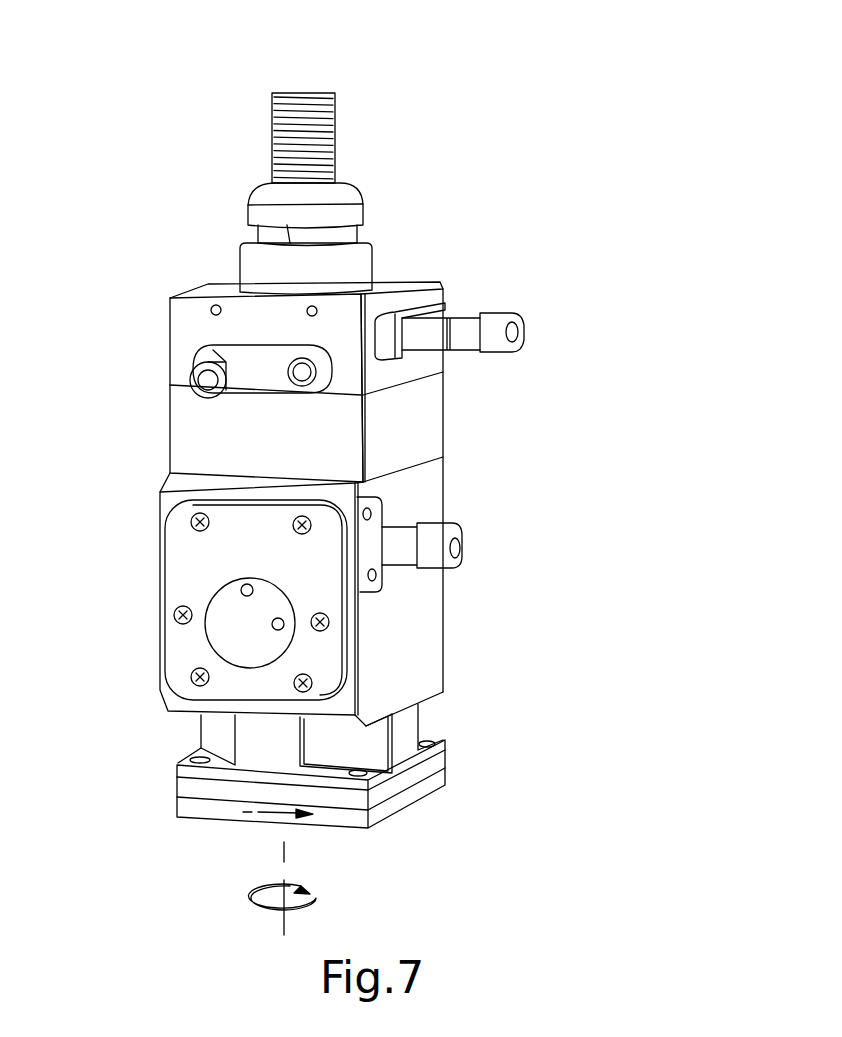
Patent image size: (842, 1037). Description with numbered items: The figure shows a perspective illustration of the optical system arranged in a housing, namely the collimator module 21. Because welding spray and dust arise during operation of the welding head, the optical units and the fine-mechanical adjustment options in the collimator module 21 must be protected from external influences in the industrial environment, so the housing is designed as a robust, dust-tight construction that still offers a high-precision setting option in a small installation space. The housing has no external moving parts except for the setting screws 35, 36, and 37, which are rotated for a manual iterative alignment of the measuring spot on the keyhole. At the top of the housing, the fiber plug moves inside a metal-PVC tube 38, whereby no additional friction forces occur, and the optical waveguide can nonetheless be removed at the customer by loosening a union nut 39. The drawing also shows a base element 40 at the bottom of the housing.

The collimator module 21 is at (492, 243).
The setting screw 35 is at (468, 328).
The setting screw 36 is at (222, 347).
The setting screw 37 is at (443, 512).
The metal-PVC tube 38 is at (338, 149).
The union nut 39 is at (365, 206).
The base plate 40 is at (412, 776).